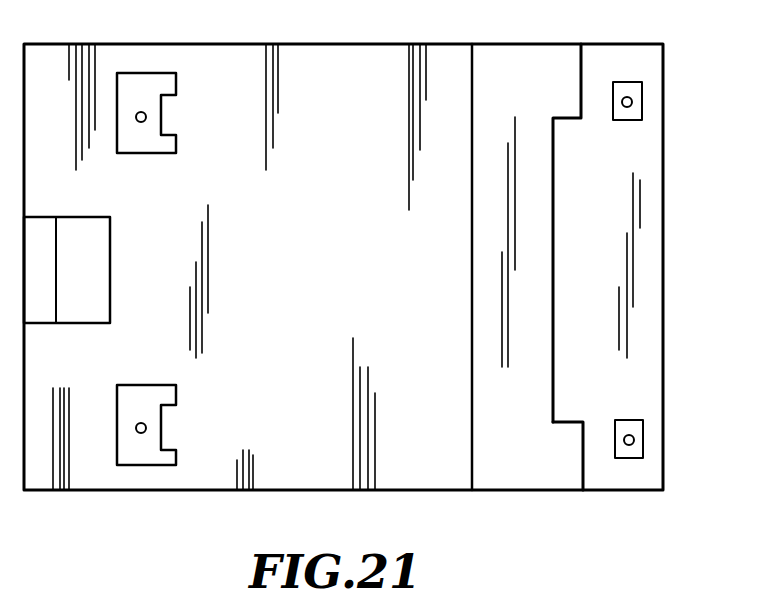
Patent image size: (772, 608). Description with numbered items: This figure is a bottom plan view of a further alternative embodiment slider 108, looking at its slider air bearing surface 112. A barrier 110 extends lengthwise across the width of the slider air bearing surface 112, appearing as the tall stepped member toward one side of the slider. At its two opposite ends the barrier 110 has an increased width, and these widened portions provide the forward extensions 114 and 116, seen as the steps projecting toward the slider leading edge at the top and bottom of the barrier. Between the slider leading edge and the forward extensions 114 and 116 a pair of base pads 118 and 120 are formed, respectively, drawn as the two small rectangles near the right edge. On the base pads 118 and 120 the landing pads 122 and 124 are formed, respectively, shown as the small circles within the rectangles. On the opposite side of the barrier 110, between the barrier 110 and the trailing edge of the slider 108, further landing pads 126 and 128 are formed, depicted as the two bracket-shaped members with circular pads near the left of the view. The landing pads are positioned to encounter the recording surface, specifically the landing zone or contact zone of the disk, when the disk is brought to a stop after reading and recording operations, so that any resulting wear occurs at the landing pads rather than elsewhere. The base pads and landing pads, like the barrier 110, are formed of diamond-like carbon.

The slider 108 is at (305, 60).
The barrier 110 is at (512, 72).
The slider air bearing surface 112 is at (323, 268).
The forward extension 114 is at (572, 73).
The forward extension 116 is at (570, 455).
The base pad 118 is at (642, 88).
The base pad 120 is at (643, 425).
The landing pad 122 is at (632, 105).
The landing pad 124 is at (634, 443).
The landing pad 126 is at (146, 117).
The landing pad 128 is at (146, 428).